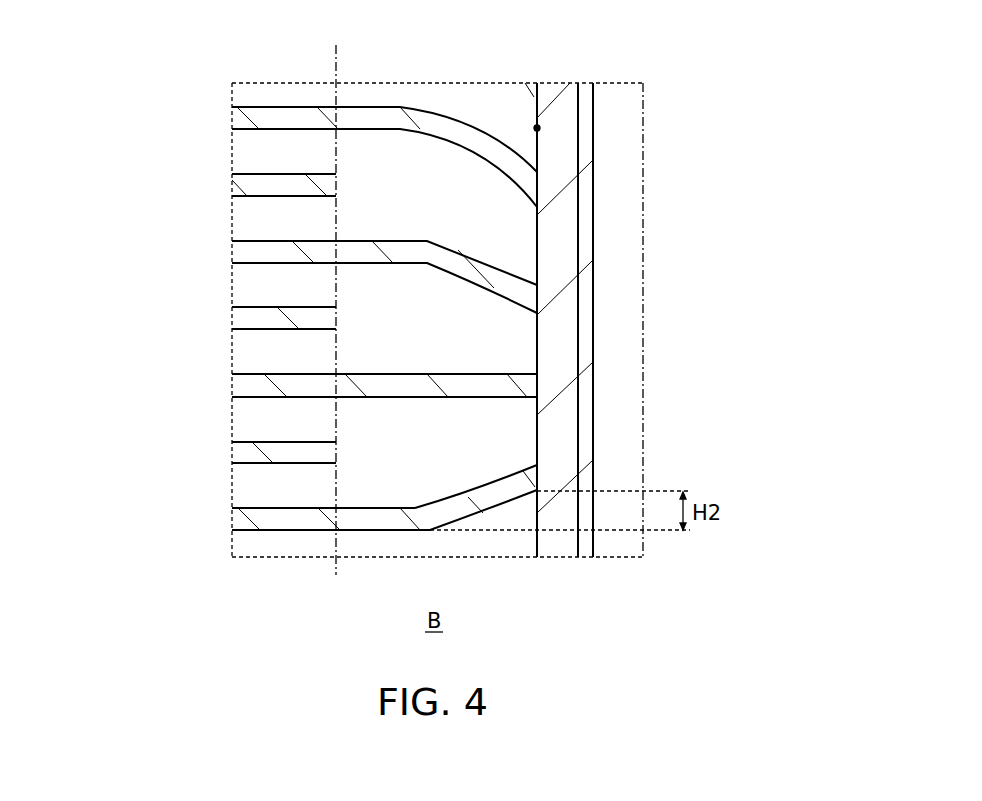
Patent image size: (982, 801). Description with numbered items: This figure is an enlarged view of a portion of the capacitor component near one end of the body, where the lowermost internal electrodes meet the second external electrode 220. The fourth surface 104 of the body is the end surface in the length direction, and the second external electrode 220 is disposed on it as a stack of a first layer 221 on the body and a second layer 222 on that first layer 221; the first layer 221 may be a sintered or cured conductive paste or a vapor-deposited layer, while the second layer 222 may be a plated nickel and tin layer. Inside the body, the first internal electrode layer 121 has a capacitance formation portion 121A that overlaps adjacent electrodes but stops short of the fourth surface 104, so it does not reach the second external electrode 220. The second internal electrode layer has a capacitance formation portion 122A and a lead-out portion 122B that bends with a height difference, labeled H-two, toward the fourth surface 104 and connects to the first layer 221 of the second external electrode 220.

The fourth surface 104 is at (537, 128).
The first internal electrode layer 121 is at (250, 455).
The capacitance formation portion 121A is at (284, 318).
The capacitance formation portion 122A is at (250, 518).
The lead-out portion 122B is at (490, 497).
The second external electrode 220 is at (674, 320).
The first layer 221 is at (557, 212).
The second layer 222 is at (585, 242).